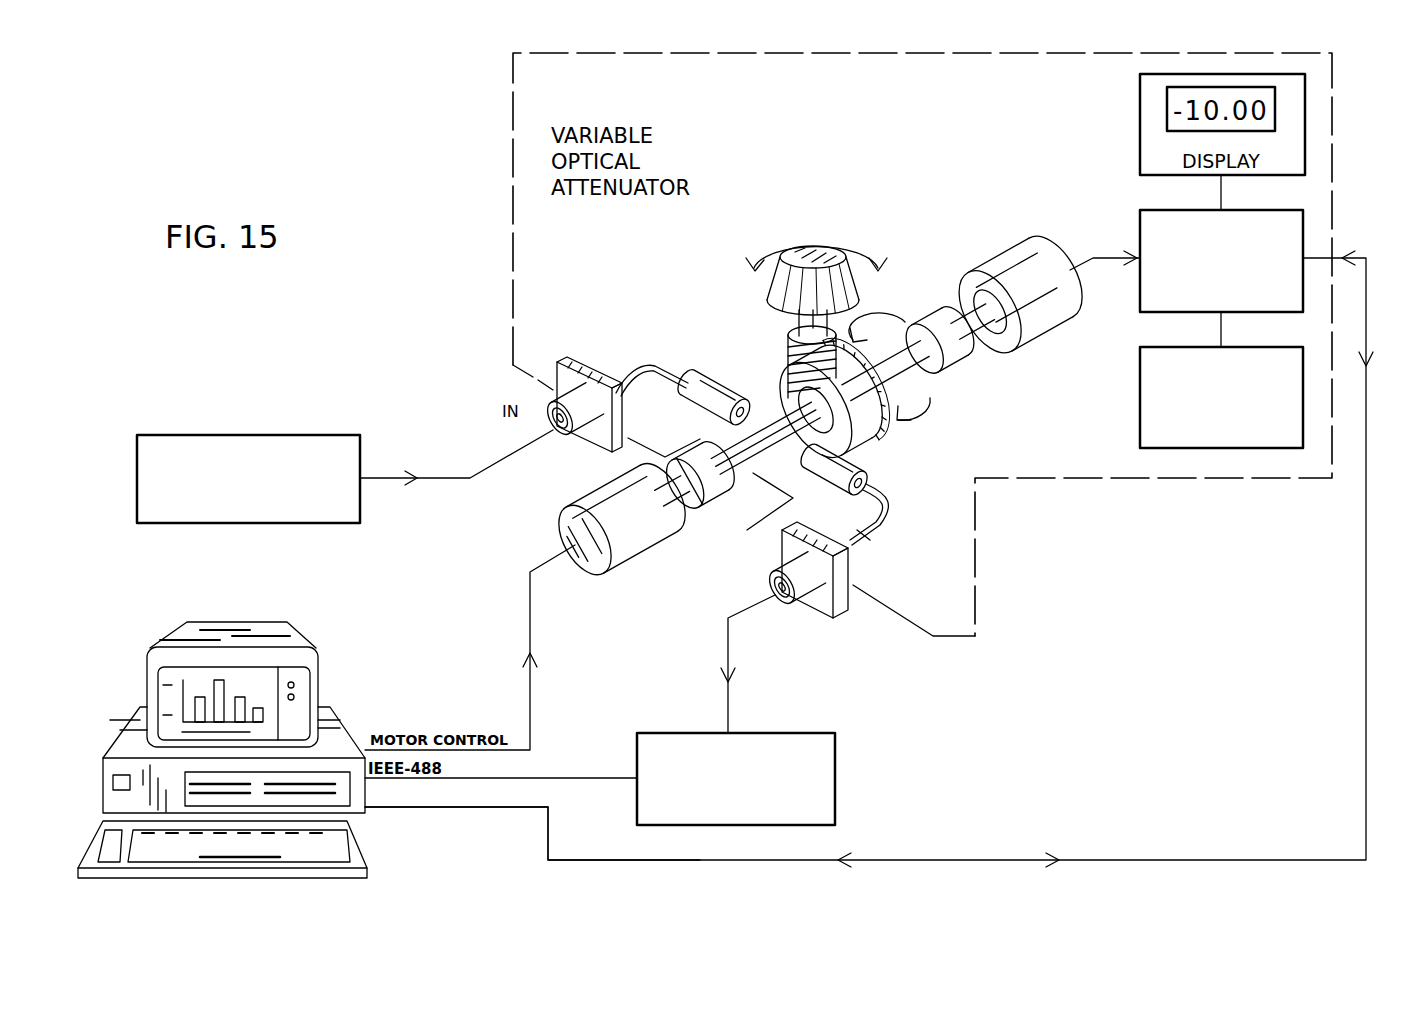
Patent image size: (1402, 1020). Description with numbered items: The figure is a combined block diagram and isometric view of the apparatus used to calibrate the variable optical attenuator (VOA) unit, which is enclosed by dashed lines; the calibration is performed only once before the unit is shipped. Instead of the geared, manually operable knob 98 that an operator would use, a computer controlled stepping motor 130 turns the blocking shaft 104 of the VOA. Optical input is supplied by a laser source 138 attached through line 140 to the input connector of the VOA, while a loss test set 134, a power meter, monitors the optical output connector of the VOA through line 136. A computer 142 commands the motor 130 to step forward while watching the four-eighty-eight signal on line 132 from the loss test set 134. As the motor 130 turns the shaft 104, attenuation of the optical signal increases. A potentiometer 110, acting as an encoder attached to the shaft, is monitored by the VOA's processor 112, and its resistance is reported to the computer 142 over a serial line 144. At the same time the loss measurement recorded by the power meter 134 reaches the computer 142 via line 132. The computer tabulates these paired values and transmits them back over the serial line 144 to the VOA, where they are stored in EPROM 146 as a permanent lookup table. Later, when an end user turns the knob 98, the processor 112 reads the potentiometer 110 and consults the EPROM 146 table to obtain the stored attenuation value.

The manually operable knob 98 is at (852, 282).
The shaft 104 is at (788, 407).
The potentiometer 110 is at (1052, 326).
The processor 112 is at (1140, 233).
The stepping motor 130 is at (637, 550).
The line 132 is at (530, 800).
The loss test set 134 is at (838, 786).
The line 136 is at (730, 657).
The laser source 138 is at (287, 525).
The line 140 is at (443, 477).
The computer 142 is at (136, 690).
The RS-232 line 144 is at (463, 808).
The EPROM 146 is at (1230, 450).